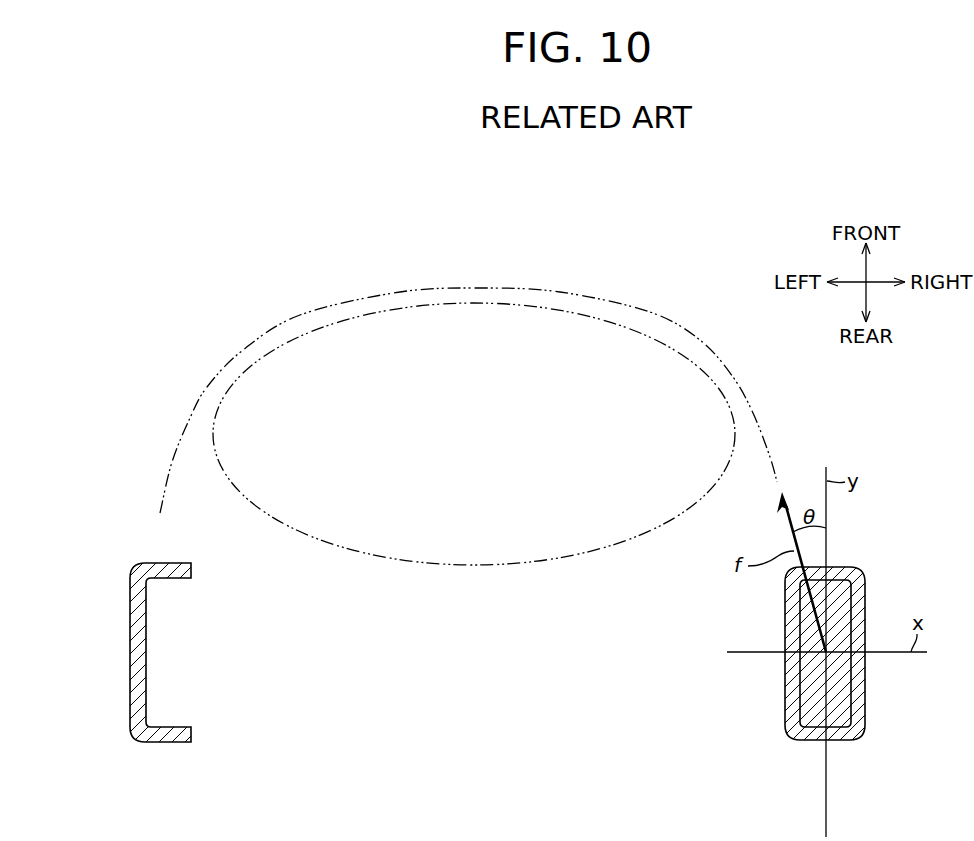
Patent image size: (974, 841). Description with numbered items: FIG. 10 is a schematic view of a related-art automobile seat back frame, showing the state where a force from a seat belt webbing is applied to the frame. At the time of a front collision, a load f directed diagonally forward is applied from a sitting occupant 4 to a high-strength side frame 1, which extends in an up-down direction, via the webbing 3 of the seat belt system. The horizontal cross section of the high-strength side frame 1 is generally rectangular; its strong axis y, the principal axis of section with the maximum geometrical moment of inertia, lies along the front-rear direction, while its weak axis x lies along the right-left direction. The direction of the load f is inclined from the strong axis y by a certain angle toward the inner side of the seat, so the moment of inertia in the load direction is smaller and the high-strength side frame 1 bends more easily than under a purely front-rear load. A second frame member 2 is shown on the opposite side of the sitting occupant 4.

The high-strength side frame 1 is at (867, 596).
The C-shaped channel member 2 is at (130, 600).
The webbing 3 is at (245, 348).
The sitting occupant 4 is at (338, 544).